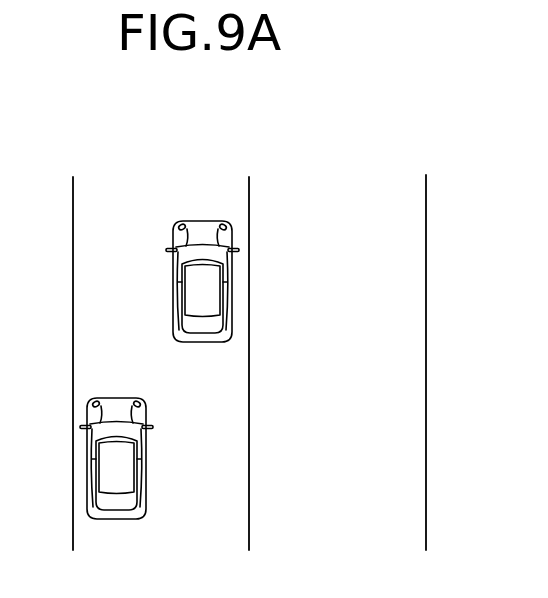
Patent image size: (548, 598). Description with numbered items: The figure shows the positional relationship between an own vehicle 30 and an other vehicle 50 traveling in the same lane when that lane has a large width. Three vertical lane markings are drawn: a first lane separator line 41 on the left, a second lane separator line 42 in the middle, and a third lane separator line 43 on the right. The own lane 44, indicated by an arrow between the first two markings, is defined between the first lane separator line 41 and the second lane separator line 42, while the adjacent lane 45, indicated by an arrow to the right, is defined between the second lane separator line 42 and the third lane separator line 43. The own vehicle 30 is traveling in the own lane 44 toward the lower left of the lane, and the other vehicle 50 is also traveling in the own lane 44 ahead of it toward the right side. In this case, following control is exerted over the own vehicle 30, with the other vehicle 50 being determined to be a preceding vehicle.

The first lane separator line 41 is at (73, 184).
The second lane separator line 42 is at (249, 186).
The third lane separator line 43 is at (426, 187).
The own lane 44 is at (163, 185).
The adjacent lane 45 is at (339, 187).
The other vehicle 50 is at (174, 302).
The own vehicle 30 is at (147, 464).